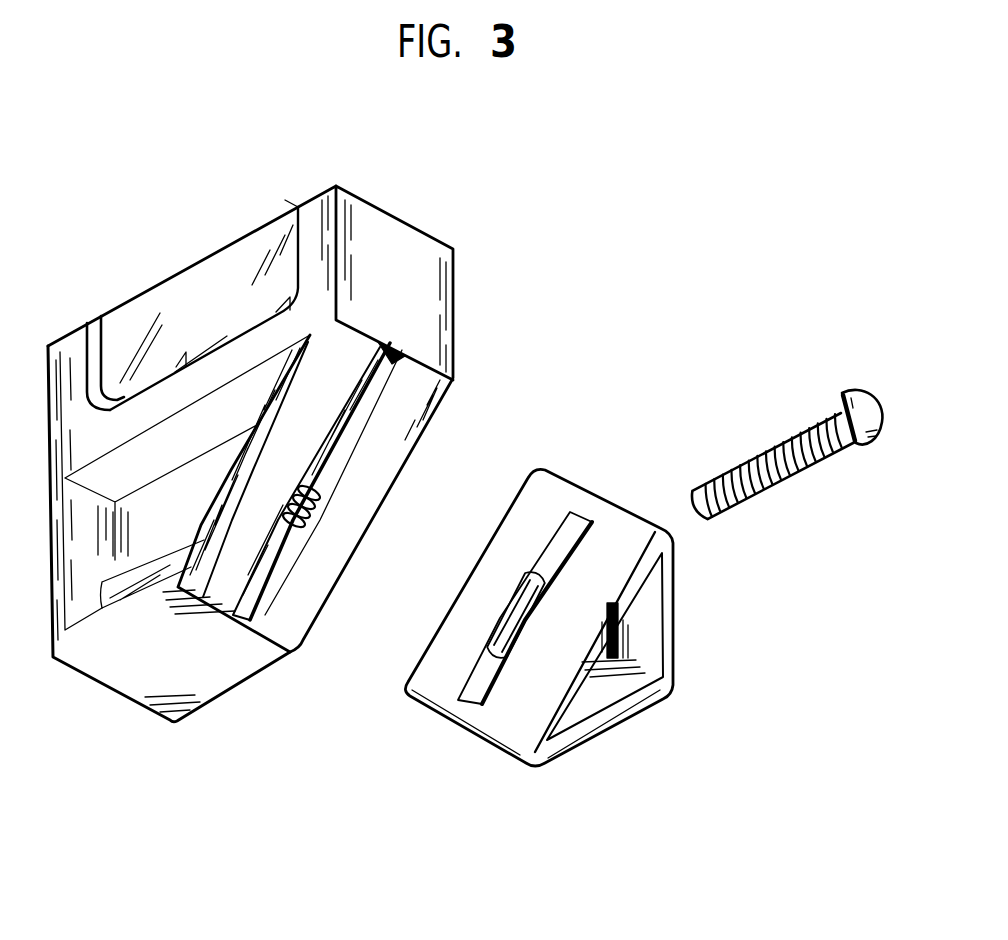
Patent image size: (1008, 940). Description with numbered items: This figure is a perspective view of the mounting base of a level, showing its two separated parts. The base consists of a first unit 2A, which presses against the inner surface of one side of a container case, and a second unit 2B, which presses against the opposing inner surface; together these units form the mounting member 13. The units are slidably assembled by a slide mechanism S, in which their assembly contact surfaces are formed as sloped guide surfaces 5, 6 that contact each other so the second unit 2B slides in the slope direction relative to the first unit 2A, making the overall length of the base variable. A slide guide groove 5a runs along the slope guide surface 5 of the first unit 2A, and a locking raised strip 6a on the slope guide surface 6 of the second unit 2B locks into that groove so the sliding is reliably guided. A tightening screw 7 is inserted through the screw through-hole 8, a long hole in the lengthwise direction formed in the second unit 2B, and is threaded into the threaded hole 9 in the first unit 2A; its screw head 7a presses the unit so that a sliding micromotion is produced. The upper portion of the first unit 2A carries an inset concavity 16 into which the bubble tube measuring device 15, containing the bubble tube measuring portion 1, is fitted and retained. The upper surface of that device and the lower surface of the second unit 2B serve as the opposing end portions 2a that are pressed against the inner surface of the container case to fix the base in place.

The bubble tube measuring portion 1 is at (227, 330).
The first unit 2A is at (398, 238).
The second unit 2B is at (574, 498).
The end portion 2a is at (270, 225).
The slope guide surface 5 is at (292, 613).
The slide guide groove 5a is at (290, 550).
The slope guide surface 6 is at (428, 692).
The locking raised strip 6a is at (473, 688).
The tightening screw 7 is at (730, 467).
The screw head 7a is at (847, 393).
The screw through-hole 8 is at (520, 623).
The threaded hole 9 is at (313, 507).
The mounting member 13 is at (527, 495).
The bubble tube measuring device 15 is at (153, 300).
The inset concavity 16 is at (118, 332).
The slide mechanism S is at (357, 703).